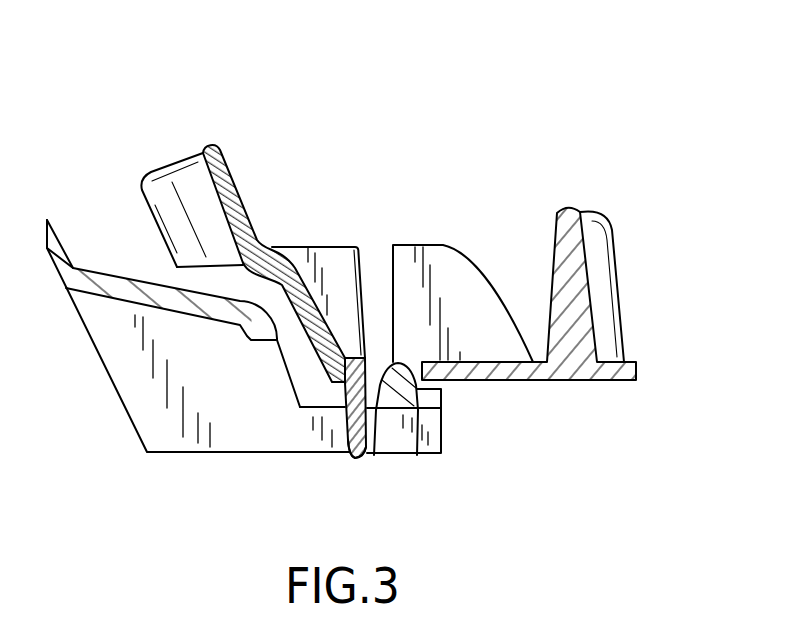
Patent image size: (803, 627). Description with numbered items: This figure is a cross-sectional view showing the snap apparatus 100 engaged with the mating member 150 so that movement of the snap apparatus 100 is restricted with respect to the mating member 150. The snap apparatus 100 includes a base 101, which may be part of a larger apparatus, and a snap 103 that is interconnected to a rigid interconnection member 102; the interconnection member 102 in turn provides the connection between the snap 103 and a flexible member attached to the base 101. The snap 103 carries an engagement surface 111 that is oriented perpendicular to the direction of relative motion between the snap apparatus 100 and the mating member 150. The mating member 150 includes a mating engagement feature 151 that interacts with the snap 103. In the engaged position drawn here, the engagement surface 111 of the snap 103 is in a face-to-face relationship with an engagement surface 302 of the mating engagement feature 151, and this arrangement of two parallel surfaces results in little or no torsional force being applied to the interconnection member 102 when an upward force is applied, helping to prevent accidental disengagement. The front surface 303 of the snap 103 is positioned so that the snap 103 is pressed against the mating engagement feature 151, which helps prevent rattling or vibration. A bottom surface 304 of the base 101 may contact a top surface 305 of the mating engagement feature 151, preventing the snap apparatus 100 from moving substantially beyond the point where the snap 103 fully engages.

The snap apparatus 100 is at (136, 102).
The base 101 is at (637, 372).
The interconnection member 102 is at (296, 264).
The snap 103 is at (352, 458).
The engagement surface 111 is at (362, 458).
The mating member 150 is at (118, 436).
The mating engagement feature 151 is at (452, 420).
The engagement surface 302 is at (414, 453).
The front surface 303 is at (372, 405).
The bottom surface 304 is at (604, 380).
The top surface 305 is at (443, 390).